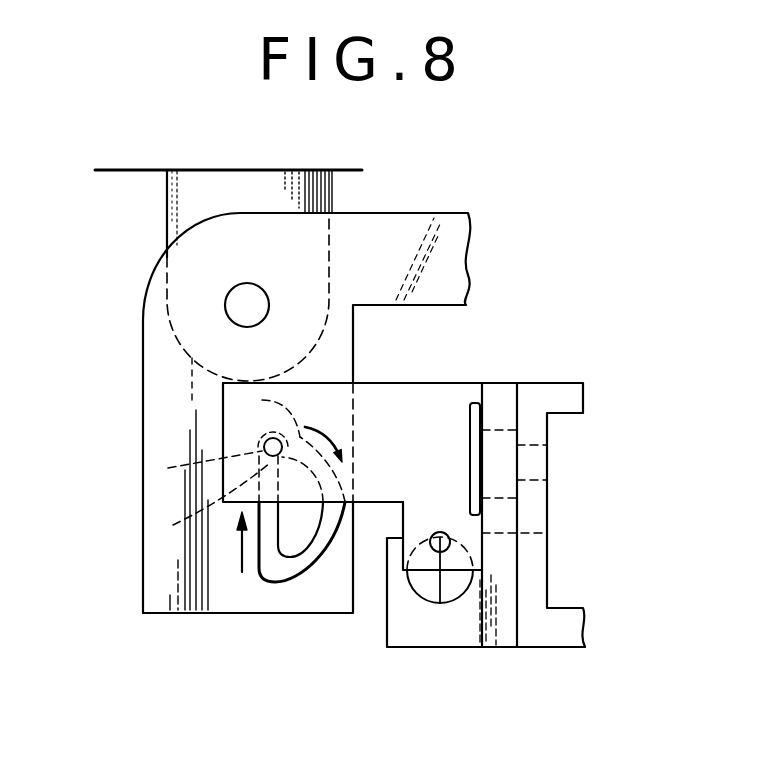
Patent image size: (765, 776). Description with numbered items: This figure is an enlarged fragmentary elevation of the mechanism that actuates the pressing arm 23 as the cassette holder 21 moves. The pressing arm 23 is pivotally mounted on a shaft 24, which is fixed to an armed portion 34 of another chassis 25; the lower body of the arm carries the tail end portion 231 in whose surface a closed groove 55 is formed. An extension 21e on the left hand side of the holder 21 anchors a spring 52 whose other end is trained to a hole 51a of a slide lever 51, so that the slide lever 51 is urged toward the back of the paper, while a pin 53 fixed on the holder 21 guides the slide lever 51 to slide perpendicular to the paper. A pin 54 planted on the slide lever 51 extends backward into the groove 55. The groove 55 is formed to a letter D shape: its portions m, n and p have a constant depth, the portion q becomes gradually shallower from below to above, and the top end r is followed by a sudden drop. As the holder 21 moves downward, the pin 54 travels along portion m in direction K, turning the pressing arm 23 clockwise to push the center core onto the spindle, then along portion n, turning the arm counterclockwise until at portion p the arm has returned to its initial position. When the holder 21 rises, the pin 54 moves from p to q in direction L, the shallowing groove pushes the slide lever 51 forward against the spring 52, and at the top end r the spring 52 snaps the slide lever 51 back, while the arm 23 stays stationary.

The cassette holder 21 is at (548, 383).
The extension 21e is at (430, 637).
The pressing arm 23 is at (398, 212).
The housing body 231 is at (162, 614).
The shaft 24 is at (255, 292).
The chassis 25 is at (163, 128).
The armed portion 34 is at (183, 213).
The slide lever 51 is at (383, 398).
The hole 51a is at (440, 532).
The spring 52 is at (463, 598).
The pin 53 is at (470, 427).
The pin 54 is at (263, 442).
The groove 55 is at (297, 582).
The groove portion m is at (270, 409).
The top end r is at (209, 462).
The groove portion q is at (213, 500).
The direction K is at (323, 432).
The direction L is at (234, 546).
The groove portion p is at (265, 582).
The groove portion n is at (318, 553).